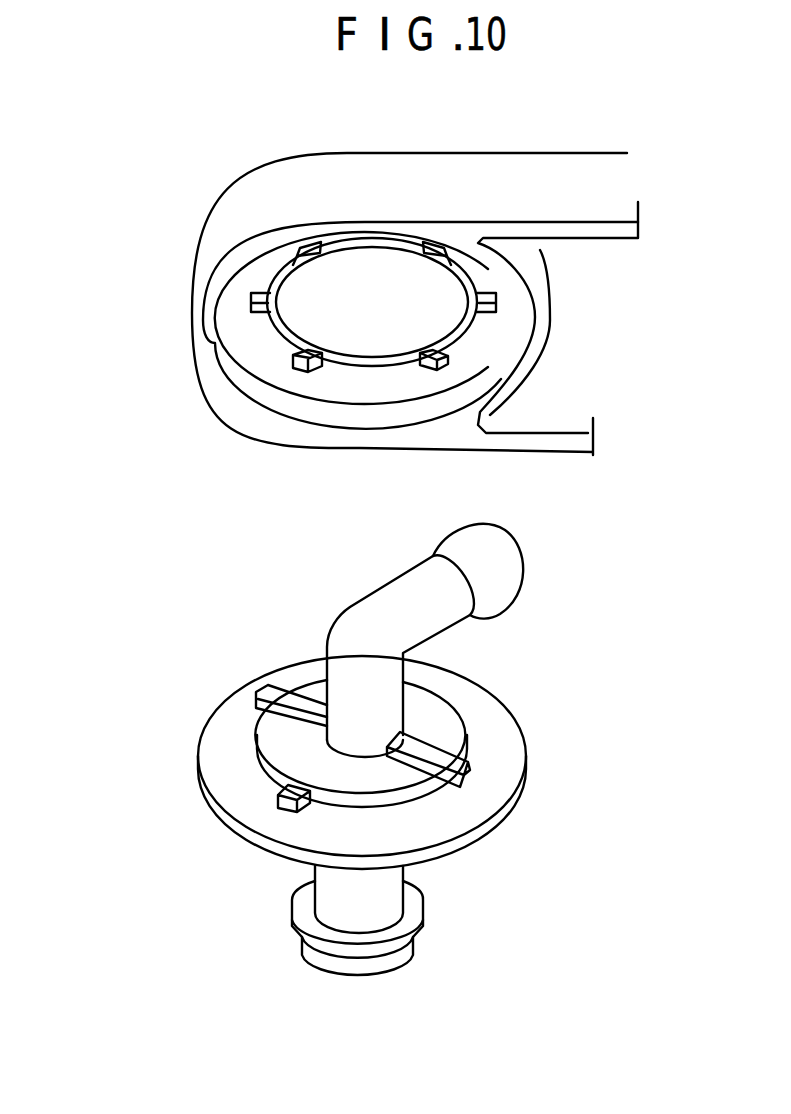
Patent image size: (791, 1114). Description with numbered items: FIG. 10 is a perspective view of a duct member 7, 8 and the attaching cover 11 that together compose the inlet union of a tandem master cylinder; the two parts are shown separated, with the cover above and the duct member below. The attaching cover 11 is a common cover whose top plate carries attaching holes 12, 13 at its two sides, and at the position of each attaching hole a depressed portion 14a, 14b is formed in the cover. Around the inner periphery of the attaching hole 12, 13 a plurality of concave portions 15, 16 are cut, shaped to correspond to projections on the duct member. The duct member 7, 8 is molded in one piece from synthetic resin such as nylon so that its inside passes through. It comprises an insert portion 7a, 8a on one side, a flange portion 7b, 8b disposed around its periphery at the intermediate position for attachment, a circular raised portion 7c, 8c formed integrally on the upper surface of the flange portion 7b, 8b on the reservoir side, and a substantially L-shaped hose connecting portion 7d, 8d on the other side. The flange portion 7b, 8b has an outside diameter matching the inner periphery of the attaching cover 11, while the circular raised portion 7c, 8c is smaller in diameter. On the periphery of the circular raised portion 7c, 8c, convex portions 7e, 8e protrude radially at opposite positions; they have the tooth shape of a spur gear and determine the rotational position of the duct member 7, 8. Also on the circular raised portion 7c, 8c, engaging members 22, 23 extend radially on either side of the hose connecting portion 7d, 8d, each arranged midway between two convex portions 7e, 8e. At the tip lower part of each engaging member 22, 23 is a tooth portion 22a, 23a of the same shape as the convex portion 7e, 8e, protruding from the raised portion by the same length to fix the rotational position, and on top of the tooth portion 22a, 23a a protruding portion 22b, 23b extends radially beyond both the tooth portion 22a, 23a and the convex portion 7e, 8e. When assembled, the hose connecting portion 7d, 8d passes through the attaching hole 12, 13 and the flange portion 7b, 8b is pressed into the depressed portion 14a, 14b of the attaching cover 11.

The attaching cover 11 is at (487, 148).
The attaching hole 12 is at (373, 375).
The attaching hole 13 is at (373, 375).
The depressed portion 14a is at (513, 363).
The depressed portion 14b is at (452, 318).
The concave portion 15 is at (427, 372).
The concave portion 16 is at (373, 377).
The duct member 7 is at (375, 749).
The duct member 8 is at (375, 749).
The insert portion 7a is at (375, 897).
The insert portion 8a is at (421, 920).
The flange portion 7b is at (502, 749).
The flange portion 8b is at (421, 762).
The circular raised portion 7c is at (438, 726).
The circular raised portion 8c is at (425, 726).
The hose connecting portion 7d is at (497, 582).
The hose connecting portion 8d is at (544, 571).
The convex portion 7e is at (280, 792).
The convex portion 8e is at (225, 838).
The engaging member 22 is at (375, 772).
The engaging member 23 is at (375, 772).
The tooth portion 22a is at (455, 783).
The tooth portion 23a is at (522, 796).
The protruding portion 22b is at (467, 765).
The protruding portion 23b is at (472, 746).